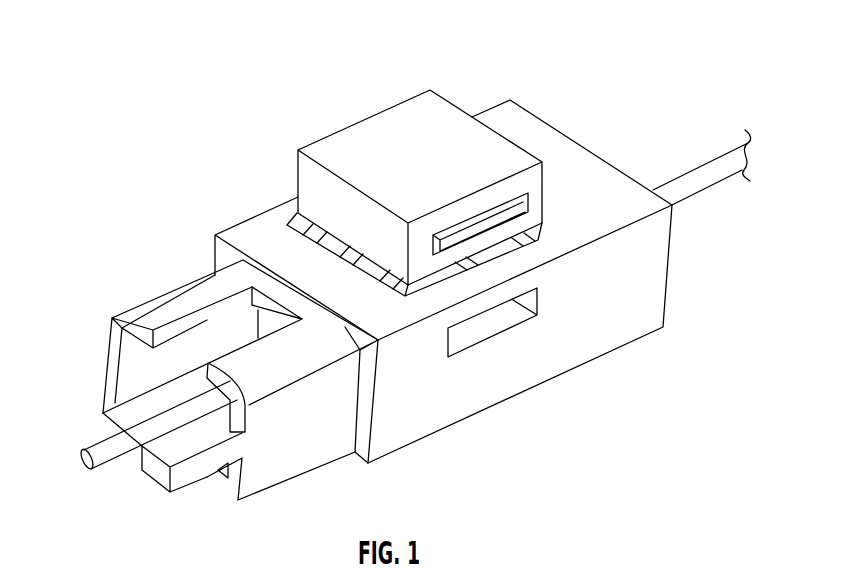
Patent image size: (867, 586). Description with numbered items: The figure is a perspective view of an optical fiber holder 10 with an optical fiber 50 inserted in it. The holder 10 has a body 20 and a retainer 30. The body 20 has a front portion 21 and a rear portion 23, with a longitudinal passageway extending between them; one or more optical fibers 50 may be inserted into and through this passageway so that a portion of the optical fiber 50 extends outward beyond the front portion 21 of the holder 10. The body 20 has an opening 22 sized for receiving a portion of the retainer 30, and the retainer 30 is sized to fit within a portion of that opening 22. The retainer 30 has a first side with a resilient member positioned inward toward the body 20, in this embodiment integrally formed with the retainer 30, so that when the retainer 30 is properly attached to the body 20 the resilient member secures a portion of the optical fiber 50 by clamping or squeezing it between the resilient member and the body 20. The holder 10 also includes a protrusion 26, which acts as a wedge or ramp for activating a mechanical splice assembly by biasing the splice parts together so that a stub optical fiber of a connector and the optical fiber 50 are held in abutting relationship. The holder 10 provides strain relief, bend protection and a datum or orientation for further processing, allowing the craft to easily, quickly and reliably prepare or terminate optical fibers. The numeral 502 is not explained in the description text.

The optical fiber holder 10 is at (145, 143).
The body 20 is at (479, 281).
The front portion 21 is at (203, 390).
The opening 22 is at (413, 290).
The rear portion 23 is at (668, 280).
The protrusion 26 is at (160, 477).
The retainer 30 is at (430, 142).
The optical fiber 50 is at (695, 177).
The pin / conductor 502 is at (93, 450).